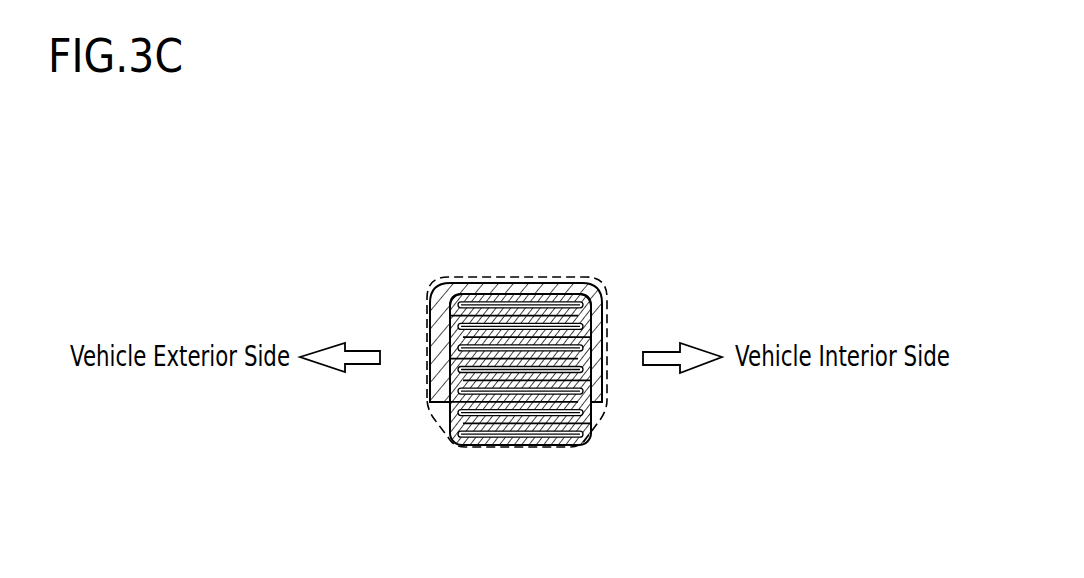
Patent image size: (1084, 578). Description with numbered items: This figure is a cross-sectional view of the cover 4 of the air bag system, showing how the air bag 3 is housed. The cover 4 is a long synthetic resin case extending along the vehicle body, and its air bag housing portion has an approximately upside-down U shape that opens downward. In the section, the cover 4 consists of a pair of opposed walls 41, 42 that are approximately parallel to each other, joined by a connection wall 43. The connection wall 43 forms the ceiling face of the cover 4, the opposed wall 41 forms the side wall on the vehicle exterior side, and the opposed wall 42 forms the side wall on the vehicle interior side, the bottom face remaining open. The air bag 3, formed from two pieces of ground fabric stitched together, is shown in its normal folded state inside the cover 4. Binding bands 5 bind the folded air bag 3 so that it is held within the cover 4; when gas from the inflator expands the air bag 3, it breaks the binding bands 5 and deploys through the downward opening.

The air bag 3 is at (517, 422).
The cover 4 is at (785, 160).
The binding bands 5 is at (435, 418).
The opposed wall 41 is at (430, 333).
The opposed wall 42 is at (603, 333).
The connection wall 43 is at (513, 287).